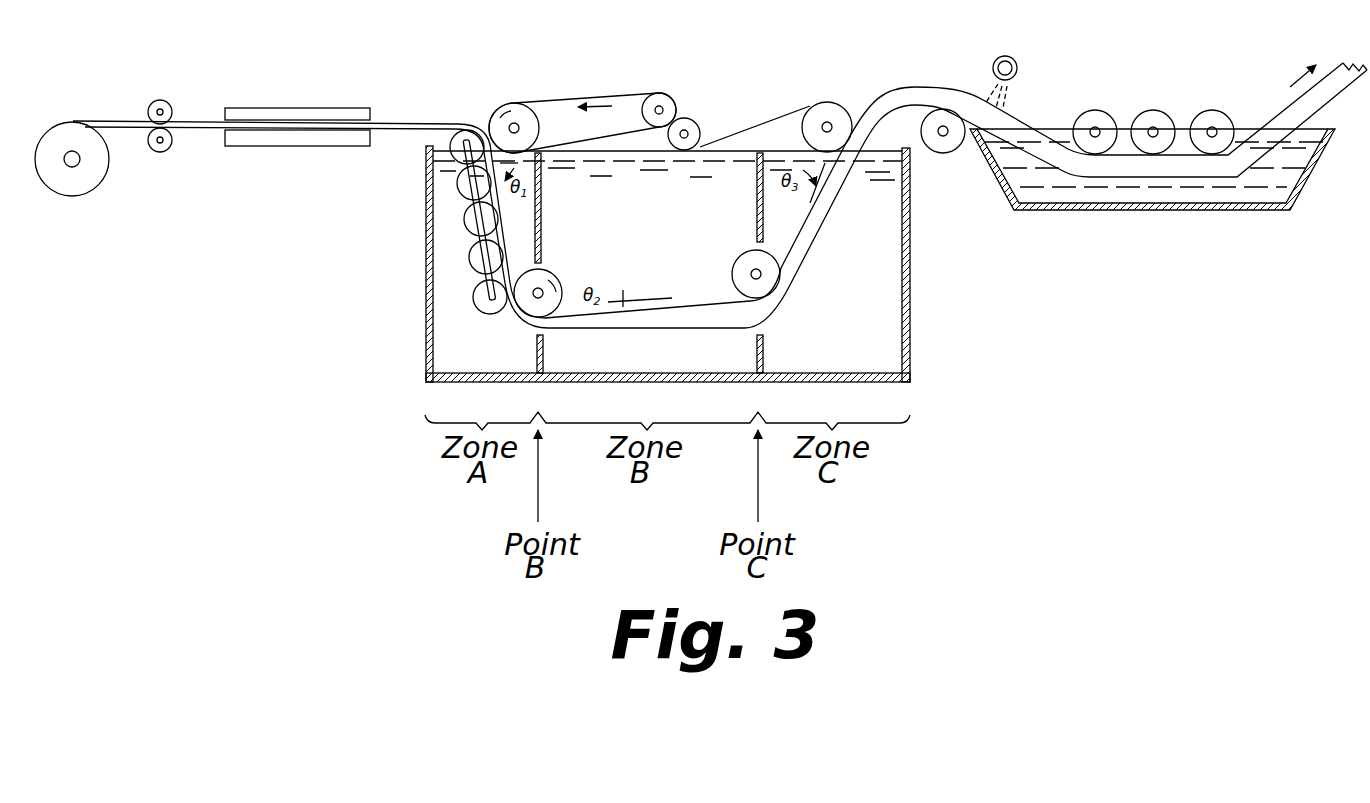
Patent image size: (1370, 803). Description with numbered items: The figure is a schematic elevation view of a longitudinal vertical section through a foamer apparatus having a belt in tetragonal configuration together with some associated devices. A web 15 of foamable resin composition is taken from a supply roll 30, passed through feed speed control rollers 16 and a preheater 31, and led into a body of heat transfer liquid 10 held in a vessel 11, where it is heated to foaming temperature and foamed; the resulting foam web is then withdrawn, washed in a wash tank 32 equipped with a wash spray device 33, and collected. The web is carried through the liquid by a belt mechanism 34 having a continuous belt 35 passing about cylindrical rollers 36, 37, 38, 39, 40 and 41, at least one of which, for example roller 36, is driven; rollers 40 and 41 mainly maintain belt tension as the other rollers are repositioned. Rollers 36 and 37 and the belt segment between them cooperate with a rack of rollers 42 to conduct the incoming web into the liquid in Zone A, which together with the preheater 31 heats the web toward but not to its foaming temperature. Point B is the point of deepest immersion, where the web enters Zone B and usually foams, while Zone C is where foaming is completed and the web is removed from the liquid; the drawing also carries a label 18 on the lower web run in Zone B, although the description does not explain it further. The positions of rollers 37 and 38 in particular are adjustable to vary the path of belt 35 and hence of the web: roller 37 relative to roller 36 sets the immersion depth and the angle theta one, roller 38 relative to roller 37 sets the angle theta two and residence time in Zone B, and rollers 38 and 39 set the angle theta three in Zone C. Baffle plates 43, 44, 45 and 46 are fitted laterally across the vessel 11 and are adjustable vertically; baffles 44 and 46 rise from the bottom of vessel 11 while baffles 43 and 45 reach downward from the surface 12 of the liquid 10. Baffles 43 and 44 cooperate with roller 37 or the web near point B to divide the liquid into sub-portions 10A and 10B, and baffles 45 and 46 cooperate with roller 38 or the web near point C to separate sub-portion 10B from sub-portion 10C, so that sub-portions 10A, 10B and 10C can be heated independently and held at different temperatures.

The web 15 is at (115, 120).
The feed speed control rollers 16 is at (168, 104).
The supply roll 30 is at (80, 196).
The preheater 31 is at (303, 143).
The vessel 11 is at (426, 342).
The surface 12 is at (611, 160).
The body of heat transfer liquid 10 is at (693, 235).
The sub-portion of heat transfer liquid 10A is at (503, 363).
The sub-portion of heat transfer liquid 10B is at (622, 363).
The sub-portion of heat transfer liquid 10C is at (810, 366).
The web bottom run 18 is at (702, 307).
The wash spray device 33 is at (1018, 63).
The wash tank 32 is at (1160, 211).
The belt mechanism 34 is at (749, 117).
The continuous belt 35 is at (613, 94).
The roller 36 is at (539, 128).
The roller 37 is at (557, 288).
The roller 38 is at (747, 273).
The roller 39 is at (829, 103).
The roller 40 is at (690, 120).
The roller 41 is at (652, 116).
The rack of rollers 42 is at (462, 166).
The baffle plate 43 is at (543, 207).
The baffle plate 44 is at (543, 342).
The baffle plate 45 is at (756, 191).
The baffle plate 46 is at (753, 345).